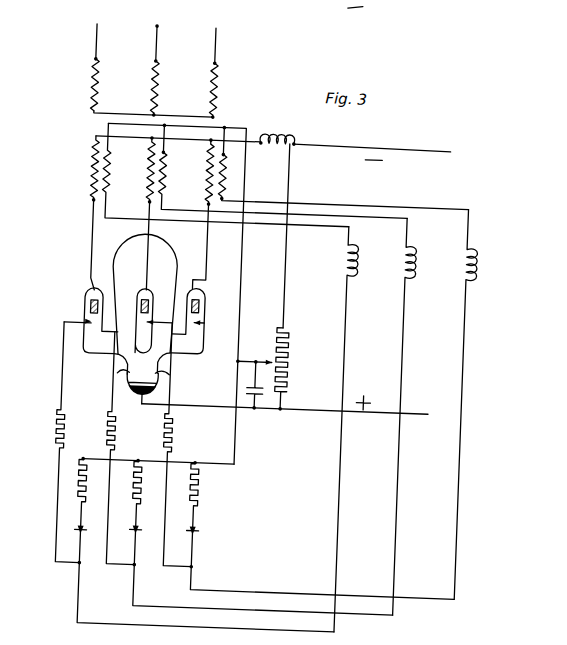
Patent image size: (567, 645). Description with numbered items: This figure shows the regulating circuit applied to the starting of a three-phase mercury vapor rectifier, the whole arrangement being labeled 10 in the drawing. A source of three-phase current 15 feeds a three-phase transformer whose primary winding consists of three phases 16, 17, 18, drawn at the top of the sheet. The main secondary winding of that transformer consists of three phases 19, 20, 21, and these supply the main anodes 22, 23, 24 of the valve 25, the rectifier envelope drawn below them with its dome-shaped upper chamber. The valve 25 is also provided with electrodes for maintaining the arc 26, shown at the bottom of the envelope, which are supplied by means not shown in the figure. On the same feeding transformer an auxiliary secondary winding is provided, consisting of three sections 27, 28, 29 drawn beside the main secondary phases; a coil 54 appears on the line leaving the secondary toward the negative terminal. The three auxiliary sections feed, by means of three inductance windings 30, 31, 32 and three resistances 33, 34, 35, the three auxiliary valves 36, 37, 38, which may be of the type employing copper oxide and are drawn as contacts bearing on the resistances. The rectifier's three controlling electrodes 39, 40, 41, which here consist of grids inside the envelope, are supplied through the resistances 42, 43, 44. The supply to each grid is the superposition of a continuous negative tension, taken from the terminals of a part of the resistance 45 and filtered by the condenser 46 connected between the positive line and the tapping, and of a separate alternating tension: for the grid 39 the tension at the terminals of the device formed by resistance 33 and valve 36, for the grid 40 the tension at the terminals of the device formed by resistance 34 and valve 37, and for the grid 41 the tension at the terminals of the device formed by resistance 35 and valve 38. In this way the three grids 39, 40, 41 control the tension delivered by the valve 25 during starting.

The rectifier system 10 is at (337, 1).
The source of three-phase current 15 is at (147, 26).
The primary winding phase 16 is at (85, 76).
The primary winding phase 17 is at (144, 81).
The primary winding phase 18 is at (204, 81).
The main secondary phase 19 is at (87, 170).
The main secondary phase 20 is at (144, 191).
The main secondary phase 21 is at (202, 190).
The main anode 22 is at (90, 308).
The main anode 23 is at (141, 305).
The main anode 24 is at (200, 300).
The valve 25 is at (118, 276).
The electrodes for maintaining the arc 26 is at (166, 376).
The auxiliary secondary winding section 27 is at (104, 165).
The auxiliary secondary winding section 28 is at (161, 165).
The auxiliary secondary winding section 29 is at (221, 173).
The inductance winding 30 is at (345, 255).
The inductance winding 31 is at (404, 260).
The inductance winding 32 is at (478, 262).
The resistance 33 is at (85, 490).
The resistance 34 is at (141, 493).
The resistance 35 is at (198, 491).
The auxiliary valve 36 is at (86, 533).
The auxiliary valve 37 is at (141, 534).
The auxiliary valve 38 is at (204, 535).
The controlling electrode 39 is at (78, 347).
The controlling electrode 40 is at (152, 324).
The controlling electrode 41 is at (205, 321).
The resistance 42 is at (70, 440).
The resistance 43 is at (121, 439).
The resistance 44 is at (178, 436).
The resistance 45 is at (287, 355).
The condenser 46 is at (283, 389).
The reactor coil 54 is at (261, 134).